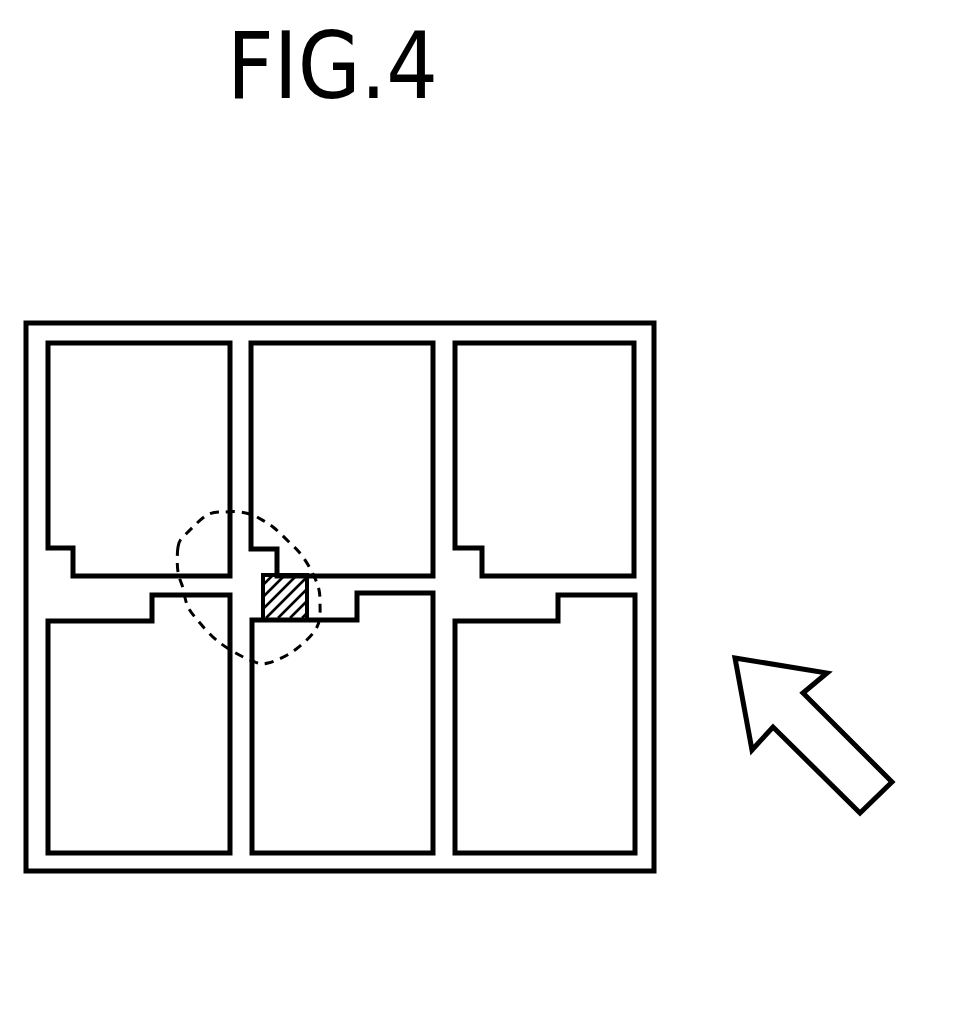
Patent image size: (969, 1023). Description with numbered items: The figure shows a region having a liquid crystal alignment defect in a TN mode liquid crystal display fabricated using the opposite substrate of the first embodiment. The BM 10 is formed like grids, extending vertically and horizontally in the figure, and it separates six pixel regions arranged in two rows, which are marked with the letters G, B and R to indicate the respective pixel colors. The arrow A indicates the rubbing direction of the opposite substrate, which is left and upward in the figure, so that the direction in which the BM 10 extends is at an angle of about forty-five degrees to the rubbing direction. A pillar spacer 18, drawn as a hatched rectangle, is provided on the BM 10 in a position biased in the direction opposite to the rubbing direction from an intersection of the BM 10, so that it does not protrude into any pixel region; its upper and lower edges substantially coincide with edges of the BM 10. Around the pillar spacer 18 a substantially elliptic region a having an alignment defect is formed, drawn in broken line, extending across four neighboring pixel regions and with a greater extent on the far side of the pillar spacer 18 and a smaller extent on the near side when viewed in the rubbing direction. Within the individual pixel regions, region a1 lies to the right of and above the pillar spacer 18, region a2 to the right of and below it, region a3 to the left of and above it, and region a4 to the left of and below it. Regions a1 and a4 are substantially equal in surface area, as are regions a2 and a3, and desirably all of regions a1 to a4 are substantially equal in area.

The BM 10 is at (239, 367).
The pillar spacer 18 is at (288, 577).
The region having an alignment defect a is at (296, 652).
The region having an alignment defect a1 is at (273, 534).
The region having an alignment defect a2 is at (282, 646).
The region having an alignment defect a3 is at (201, 552).
The region having an alignment defect a4 is at (202, 625).
The arrow A is at (813, 735).
The green sub-pixel G is at (139, 598).
The blue sub-pixel B is at (342, 598).
The red sub-pixel R is at (545, 598).